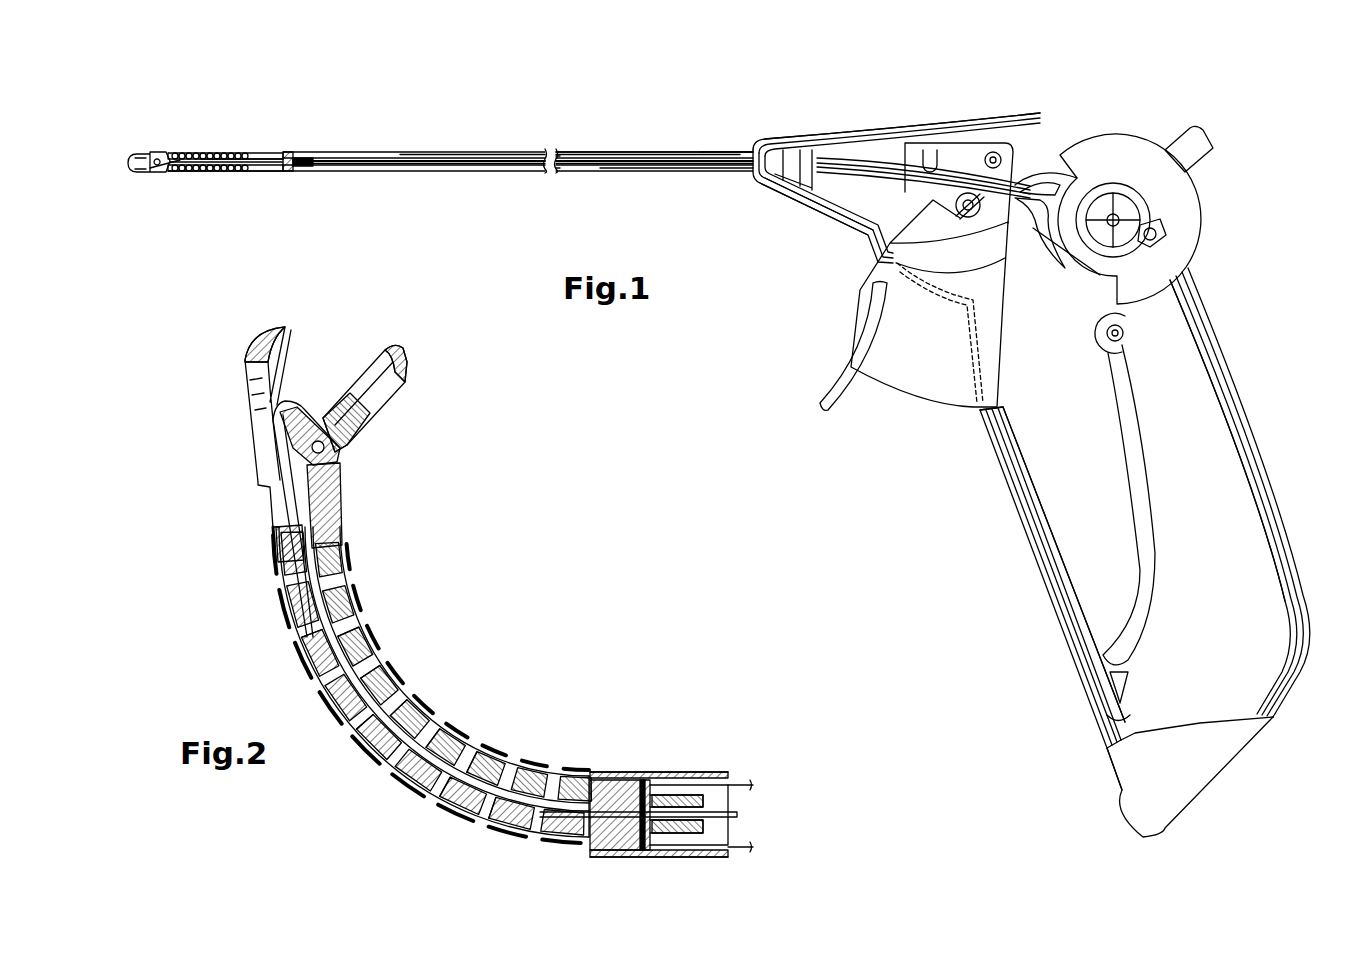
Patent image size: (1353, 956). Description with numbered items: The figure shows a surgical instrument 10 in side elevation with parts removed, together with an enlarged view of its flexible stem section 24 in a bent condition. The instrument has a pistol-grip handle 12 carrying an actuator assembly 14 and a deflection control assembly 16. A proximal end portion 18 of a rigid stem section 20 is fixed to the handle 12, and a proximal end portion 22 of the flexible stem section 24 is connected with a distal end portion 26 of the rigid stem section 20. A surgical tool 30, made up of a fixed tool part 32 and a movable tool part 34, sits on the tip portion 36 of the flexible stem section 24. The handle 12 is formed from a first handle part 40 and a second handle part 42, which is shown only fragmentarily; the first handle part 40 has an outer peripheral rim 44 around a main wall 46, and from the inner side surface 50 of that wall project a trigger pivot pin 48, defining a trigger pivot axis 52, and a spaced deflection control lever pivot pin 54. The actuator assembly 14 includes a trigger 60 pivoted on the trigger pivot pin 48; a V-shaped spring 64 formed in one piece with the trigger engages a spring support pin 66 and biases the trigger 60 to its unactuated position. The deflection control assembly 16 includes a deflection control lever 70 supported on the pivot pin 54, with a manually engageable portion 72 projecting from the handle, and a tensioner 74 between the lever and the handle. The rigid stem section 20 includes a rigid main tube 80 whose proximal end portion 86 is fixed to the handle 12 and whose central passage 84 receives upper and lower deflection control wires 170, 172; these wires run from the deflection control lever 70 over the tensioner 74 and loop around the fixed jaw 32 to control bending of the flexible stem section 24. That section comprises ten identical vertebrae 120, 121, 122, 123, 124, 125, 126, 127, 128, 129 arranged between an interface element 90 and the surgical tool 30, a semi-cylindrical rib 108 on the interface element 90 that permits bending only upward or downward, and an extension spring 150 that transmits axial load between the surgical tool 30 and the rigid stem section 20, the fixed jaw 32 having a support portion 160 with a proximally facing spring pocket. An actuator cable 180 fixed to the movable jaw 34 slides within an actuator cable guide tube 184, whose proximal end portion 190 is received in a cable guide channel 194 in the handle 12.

In FIG. 1, the surgical instrument 10 is at (945, 530).
In FIG. 2, the surgical instrument 10 is at (205, 645).
In FIG. 1, the handle 12 is at (1055, 622).
In FIG. 1, the actuator assembly 14 is at (822, 324).
In FIG. 1, the deflection control assembly 16 is at (1138, 118).
In FIG. 1, the proximal end portion of rigid stem section 18 is at (738, 150).
In FIG. 1, the rigid stem section 20 is at (689, 150).
In FIG. 2, the rigid stem section 20 is at (690, 718).
In FIG. 1, the proximal end portion of flexible stem section 22 is at (255, 172).
In FIG. 1, the flexible stem section 24 is at (240, 152).
In FIG. 2, the flexible stem section 24 is at (492, 608).
In FIG. 1, the distal end portion of rigid stem section 26 is at (313, 150).
In FIG. 1, the surgical tool 30 is at (150, 148).
In FIG. 2, the surgical tool 30 is at (215, 420).
In FIG. 2, the fixed tool part 32 is at (240, 360).
In FIG. 2, the movable tool part 34 is at (412, 368).
In FIG. 1, the tip portion 36 is at (172, 172).
In FIG. 2, the tip portion 36 is at (255, 598).
In FIG. 1, the first handle part 40 is at (1097, 715).
In FIG. 1, the second handle part 42 is at (1190, 720).
In FIG. 1, the outer peripheral rim 44 is at (1280, 484).
In FIG. 1, the main wall 46 is at (1200, 458).
In FIG. 1, the trigger pivot pin 48 is at (993, 152).
In FIG. 1, the inner side surface 50 is at (1197, 412).
In FIG. 1, the trigger pivot axis 52 is at (1015, 170).
In FIG. 1, the deflection control lever pivot pin 54 is at (1122, 216).
In FIG. 1, the trigger 60 is at (840, 395).
In FIG. 1, the V-shaped spring 64 is at (1155, 585).
In FIG. 1, the spring support pin 66 is at (1122, 337).
In FIG. 1, the deflection control lever 70 is at (1200, 255).
In FIG. 1, the manually engageable portion 72 is at (1205, 148).
In FIG. 1, the tensioner 74 is at (1040, 168).
In FIG. 1, the rigid main tube 80 is at (540, 150).
In FIG. 2, the rigid main tube 80 is at (710, 772).
In FIG. 1, the central passage 84 is at (718, 162).
In FIG. 1, the proximal end portion of main tube 86 is at (790, 140).
In FIG. 1, the interface element 90 is at (306, 170).
In FIG. 2, the interface element 90 is at (676, 782).
In FIG. 2, the rib 108 is at (583, 770).
In FIG. 2, the vertebra 120 is at (566, 860).
In FIG. 2, the vertebra 121 is at (537, 742).
In FIG. 2, the vertebra 122 is at (478, 830).
In FIG. 2, the vertebra 123 is at (472, 700).
In FIG. 2, the vertebra 124 is at (398, 795).
In FIG. 2, the vertebra 125 is at (422, 660).
In FIG. 2, the vertebra 126 is at (335, 728).
In FIG. 2, the vertebra 127 is at (397, 625).
In FIG. 2, the vertebra 128 is at (285, 630).
In FIG. 2, the vertebra 129 is at (357, 580).
In FIG. 1, the extension spring 150 is at (205, 152).
In FIG. 2, the extension spring 150 is at (318, 520).
In FIG. 2, the support portion 160 is at (280, 548).
In FIG. 1, the upper deflection control wire 170 is at (556, 158).
In FIG. 2, the upper deflection control wire 170 is at (742, 785).
In FIG. 1, the lower deflection control wire 172 is at (552, 168).
In FIG. 2, the lower deflection control wire 172 is at (742, 848).
In FIG. 1, the actuator cable 180 is at (410, 166).
In FIG. 2, the actuator cable 180 is at (285, 497).
In FIG. 1, the actuator cable guide tube 184 is at (385, 158).
In FIG. 2, the actuator cable guide tube 184 is at (710, 850).
In FIG. 1, the proximal end portion of guide tube 190 is at (820, 192).
In FIG. 1, the cable guide channel 194 is at (878, 185).